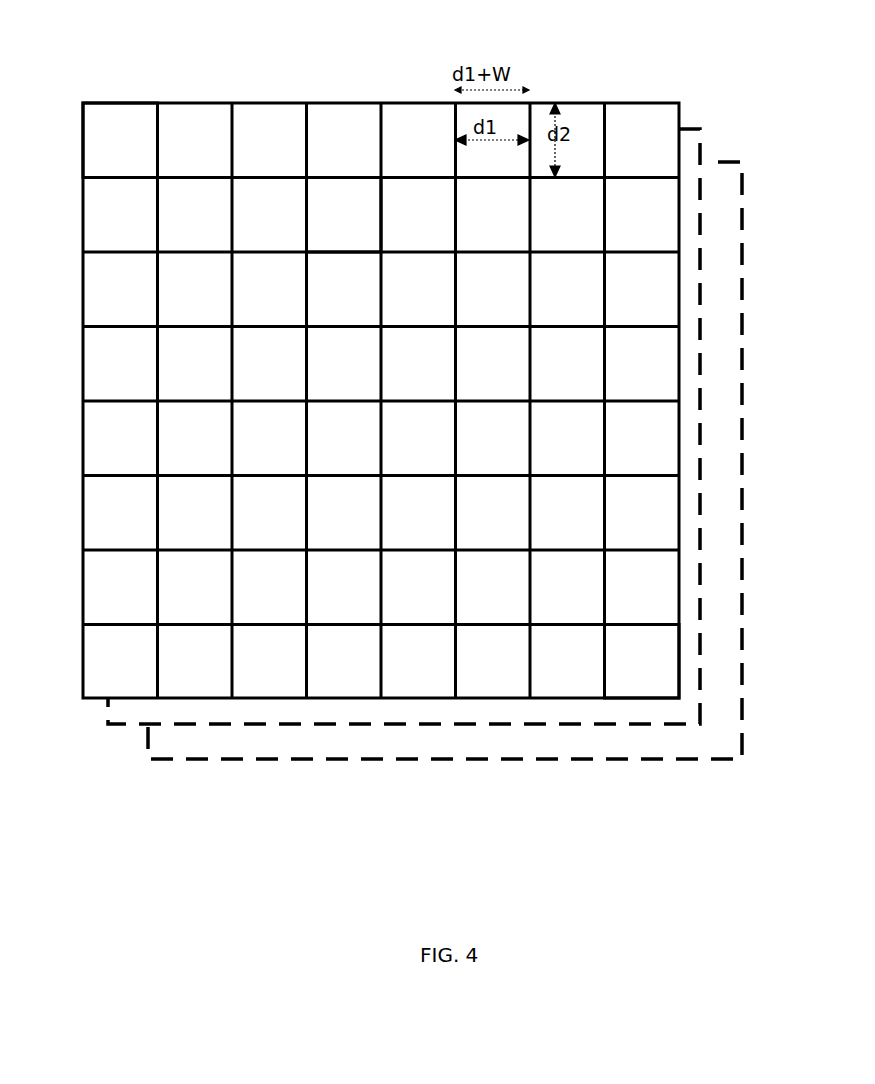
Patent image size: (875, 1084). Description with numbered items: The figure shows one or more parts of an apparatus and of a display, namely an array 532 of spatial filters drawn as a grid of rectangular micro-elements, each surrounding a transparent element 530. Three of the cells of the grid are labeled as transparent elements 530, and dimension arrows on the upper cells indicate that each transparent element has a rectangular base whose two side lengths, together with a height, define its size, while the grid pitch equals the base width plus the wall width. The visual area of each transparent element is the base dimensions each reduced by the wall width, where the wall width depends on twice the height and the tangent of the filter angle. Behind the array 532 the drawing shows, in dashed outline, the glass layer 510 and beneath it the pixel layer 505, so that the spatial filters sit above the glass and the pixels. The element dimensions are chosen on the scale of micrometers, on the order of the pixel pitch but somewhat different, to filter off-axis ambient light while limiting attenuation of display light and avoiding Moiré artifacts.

The pixel layer 505 is at (742, 318).
The glass layer 510 is at (688, 127).
The transparent element 530 is at (140, 151).
The array 532 is at (340, 100).